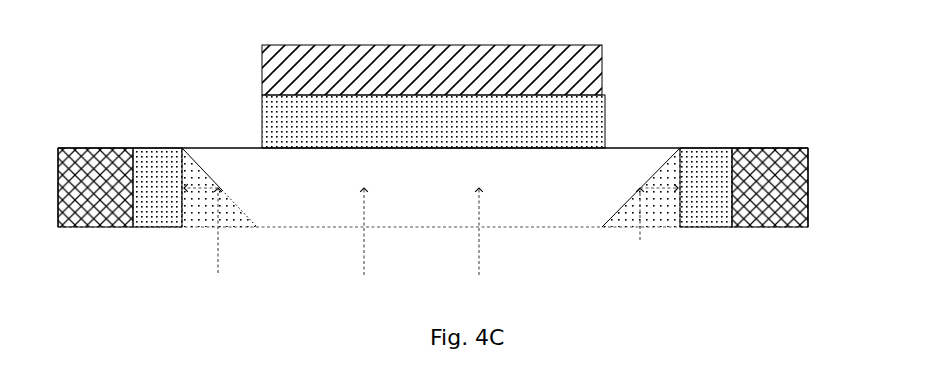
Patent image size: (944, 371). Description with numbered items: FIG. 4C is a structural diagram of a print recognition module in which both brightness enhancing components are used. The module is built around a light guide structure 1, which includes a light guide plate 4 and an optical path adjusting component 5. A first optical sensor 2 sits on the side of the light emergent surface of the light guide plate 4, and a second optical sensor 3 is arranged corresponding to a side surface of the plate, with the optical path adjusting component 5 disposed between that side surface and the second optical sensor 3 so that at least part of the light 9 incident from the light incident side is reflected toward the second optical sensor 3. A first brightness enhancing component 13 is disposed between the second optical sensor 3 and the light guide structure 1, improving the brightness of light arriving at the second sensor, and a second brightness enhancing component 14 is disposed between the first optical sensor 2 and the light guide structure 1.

The light guide structure 1 is at (456, 225).
The first optical sensor 2 is at (602, 63).
The second optical sensor 3 is at (92, 204).
The light guide plate 4 is at (627, 172).
The optical path adjusting component 5 is at (658, 198).
The light 9 is at (215, 245).
The first brightness enhancing component 13 is at (160, 167).
The second brightness enhancing component 14 is at (605, 125).